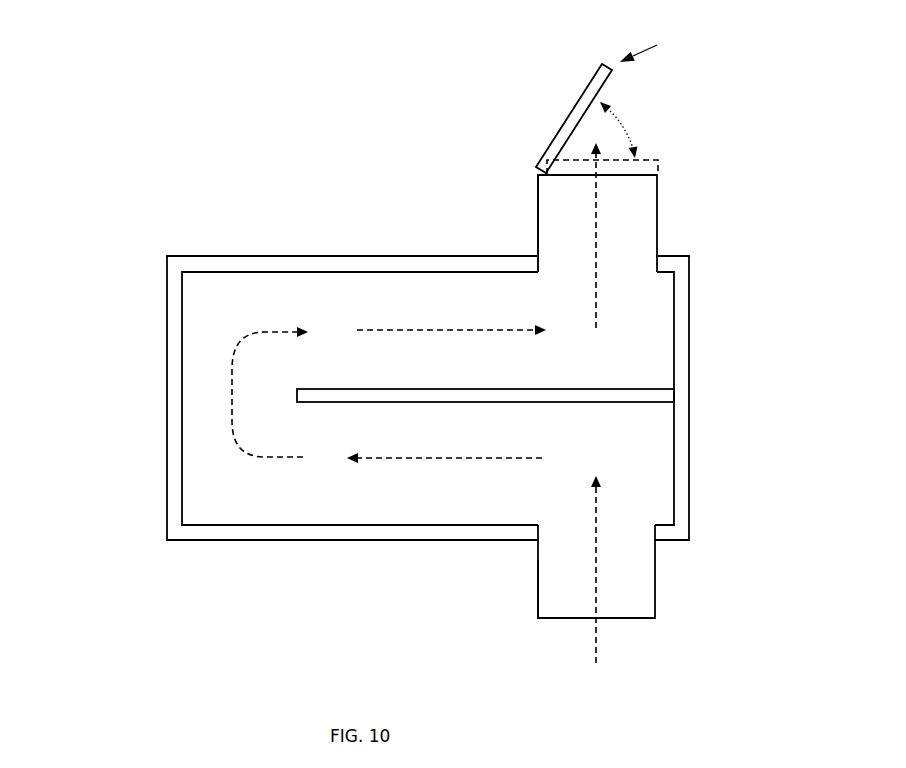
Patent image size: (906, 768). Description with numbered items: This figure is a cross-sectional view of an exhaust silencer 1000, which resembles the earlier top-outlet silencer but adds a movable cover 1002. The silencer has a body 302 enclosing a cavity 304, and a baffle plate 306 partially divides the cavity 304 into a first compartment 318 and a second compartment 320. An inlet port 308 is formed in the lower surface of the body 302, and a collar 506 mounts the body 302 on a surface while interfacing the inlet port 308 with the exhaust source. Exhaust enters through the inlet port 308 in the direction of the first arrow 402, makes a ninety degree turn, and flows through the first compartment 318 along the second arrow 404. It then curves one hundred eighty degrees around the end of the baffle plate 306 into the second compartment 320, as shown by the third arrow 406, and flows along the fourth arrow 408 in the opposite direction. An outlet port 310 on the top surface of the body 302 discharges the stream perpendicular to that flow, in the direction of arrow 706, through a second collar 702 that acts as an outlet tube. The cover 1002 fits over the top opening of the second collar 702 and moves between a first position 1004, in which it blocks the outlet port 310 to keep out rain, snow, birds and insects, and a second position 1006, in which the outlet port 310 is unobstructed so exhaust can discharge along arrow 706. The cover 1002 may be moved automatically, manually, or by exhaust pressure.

The exhaust silencer 1000 is at (92, 178).
The body 302 is at (187, 256).
The cavity 304 is at (208, 495).
The baffle plate 306 is at (507, 402).
The inlet port 308 is at (628, 545).
The outlet port 310 is at (623, 265).
The first compartment 318 is at (329, 501).
The second compartment 320 is at (329, 299).
The first arrow 402 is at (593, 652).
The second arrow 404 is at (487, 458).
The third arrow 406 is at (278, 328).
The fourth arrow 408 is at (495, 327).
The collar 506 is at (535, 607).
The second collar 702 is at (533, 213).
The arrow 706 is at (605, 165).
The cover 1002 is at (572, 103).
The first position 1004 is at (673, 144).
The second position 1006 is at (669, 49).